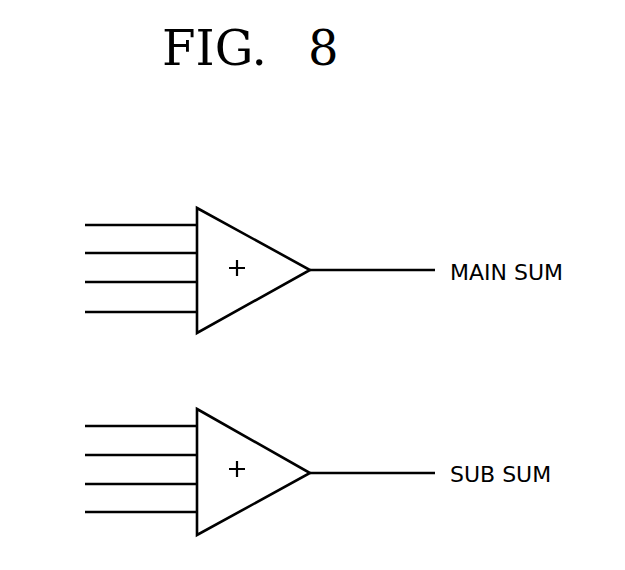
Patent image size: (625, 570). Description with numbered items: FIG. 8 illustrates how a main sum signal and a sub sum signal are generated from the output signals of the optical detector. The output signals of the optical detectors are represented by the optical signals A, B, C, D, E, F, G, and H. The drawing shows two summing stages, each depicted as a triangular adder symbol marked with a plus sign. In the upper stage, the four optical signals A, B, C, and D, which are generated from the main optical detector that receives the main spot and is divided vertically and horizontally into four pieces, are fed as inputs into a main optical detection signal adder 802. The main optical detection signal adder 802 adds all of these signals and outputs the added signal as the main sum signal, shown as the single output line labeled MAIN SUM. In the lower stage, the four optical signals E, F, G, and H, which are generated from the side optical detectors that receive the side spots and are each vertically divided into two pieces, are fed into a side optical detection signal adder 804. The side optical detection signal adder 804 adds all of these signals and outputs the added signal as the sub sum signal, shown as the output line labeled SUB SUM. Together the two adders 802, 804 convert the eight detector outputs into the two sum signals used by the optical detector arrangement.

The main optical detection signal adder 802 is at (257, 237).
The side optical detection signal adder 804 is at (257, 440).
The optical signal A is at (128, 225).
The optical signal B is at (128, 253).
The optical signal C is at (128, 282).
The optical signal D is at (128, 312).
The optical signal E is at (128, 426).
The optical signal F is at (128, 455).
The optical signal G is at (128, 484).
The optical signal H is at (128, 512).